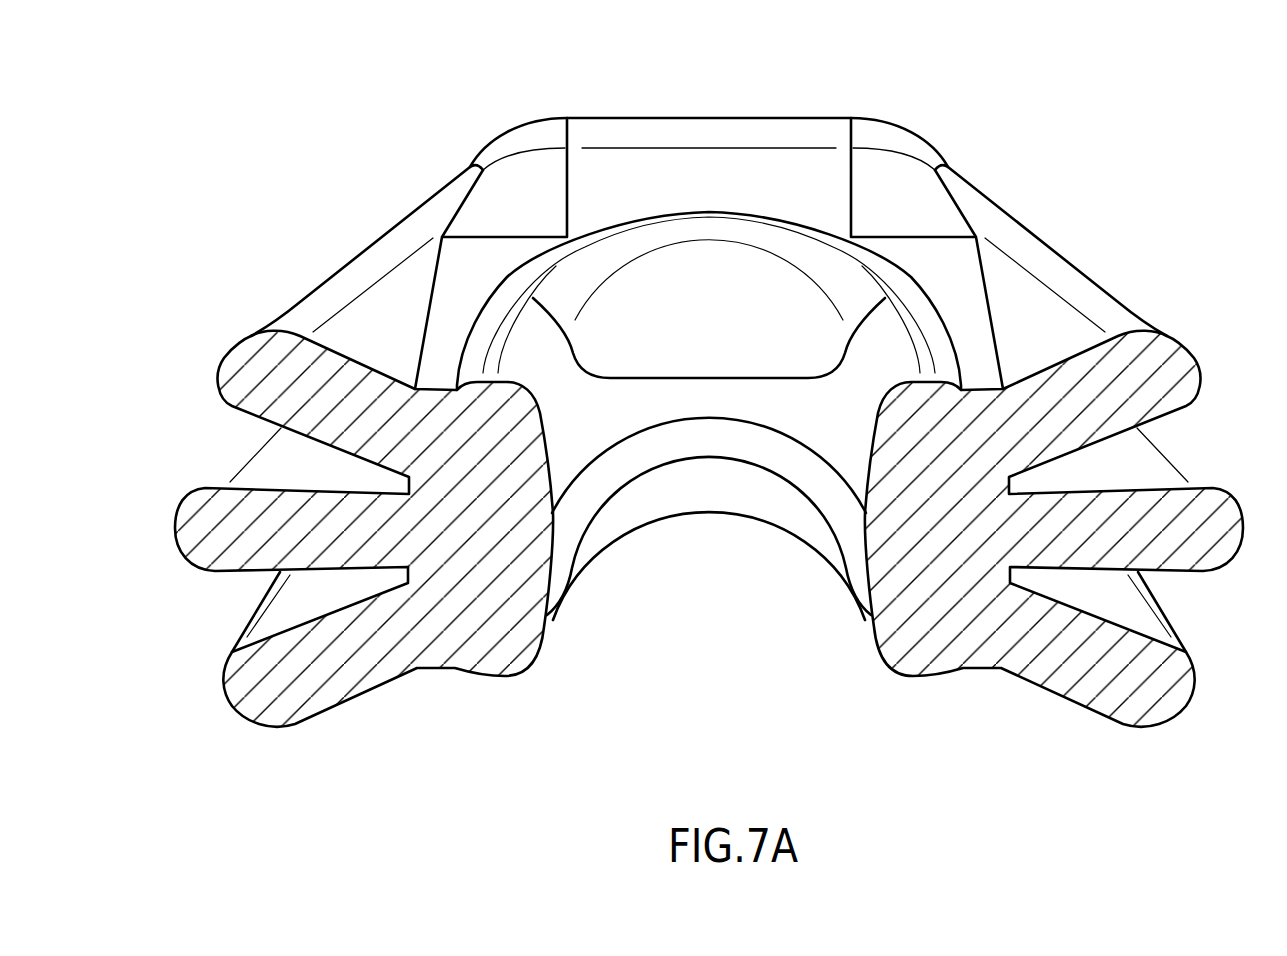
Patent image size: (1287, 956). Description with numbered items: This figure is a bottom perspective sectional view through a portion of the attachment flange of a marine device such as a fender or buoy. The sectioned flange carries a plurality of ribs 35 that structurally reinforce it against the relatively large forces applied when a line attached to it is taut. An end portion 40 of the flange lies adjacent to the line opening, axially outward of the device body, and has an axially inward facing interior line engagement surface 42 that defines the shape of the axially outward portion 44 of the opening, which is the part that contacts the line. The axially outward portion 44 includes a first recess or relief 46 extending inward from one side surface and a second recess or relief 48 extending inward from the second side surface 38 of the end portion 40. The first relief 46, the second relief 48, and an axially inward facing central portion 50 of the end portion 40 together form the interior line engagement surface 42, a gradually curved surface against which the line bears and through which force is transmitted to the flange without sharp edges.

The ribs 35 is at (347, 282).
The second side surface 38 is at (943, 263).
The end portion 40 is at (638, 130).
The interior line engagement surface 42 is at (733, 395).
The axially outward portion of the opening 44 is at (705, 538).
The first recess or relief 46 is at (632, 513).
The second recess or relief 48 is at (713, 280).
The axially inward facing central portion 50 is at (777, 430).